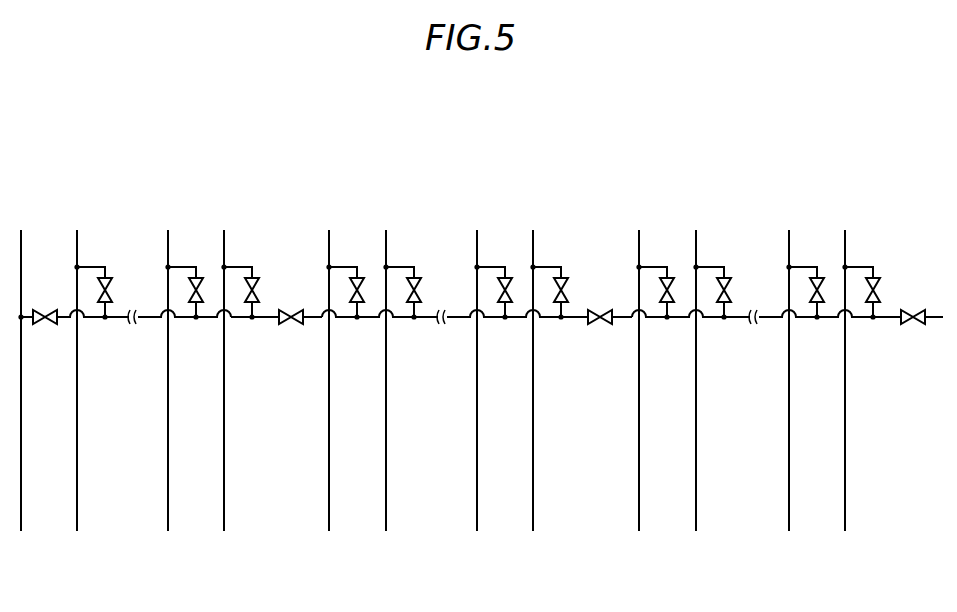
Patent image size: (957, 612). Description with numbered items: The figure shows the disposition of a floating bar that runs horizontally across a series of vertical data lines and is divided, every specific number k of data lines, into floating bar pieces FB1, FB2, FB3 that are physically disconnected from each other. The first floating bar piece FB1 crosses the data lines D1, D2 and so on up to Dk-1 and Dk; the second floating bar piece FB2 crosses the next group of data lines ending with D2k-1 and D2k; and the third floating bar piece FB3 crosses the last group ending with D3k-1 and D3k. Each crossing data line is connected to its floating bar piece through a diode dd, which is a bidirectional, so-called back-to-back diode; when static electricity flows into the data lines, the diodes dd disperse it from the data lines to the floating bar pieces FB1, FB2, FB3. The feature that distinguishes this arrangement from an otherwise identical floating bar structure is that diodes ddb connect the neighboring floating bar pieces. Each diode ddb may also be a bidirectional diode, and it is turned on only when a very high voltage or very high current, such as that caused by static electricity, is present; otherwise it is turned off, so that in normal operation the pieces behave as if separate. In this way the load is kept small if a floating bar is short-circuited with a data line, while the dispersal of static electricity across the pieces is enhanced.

The diode dd is at (38, 310).
The diode ddb is at (292, 309).
The floating bar piece FB1 is at (270, 320).
The floating bar piece FB2 is at (311, 320).
The floating bar piece FB3 is at (618, 320).
The data line D1 is at (35, 380).
The data line D2 is at (91, 380).
The data line Dk-1 is at (189, 380).
The data line Dk is at (238, 380).
The data line D2k-1 is at (429, 380).
The data line D2k is at (478, 380).
The data line D3k-1 is at (815, 380).
The data line D3k is at (864, 380).